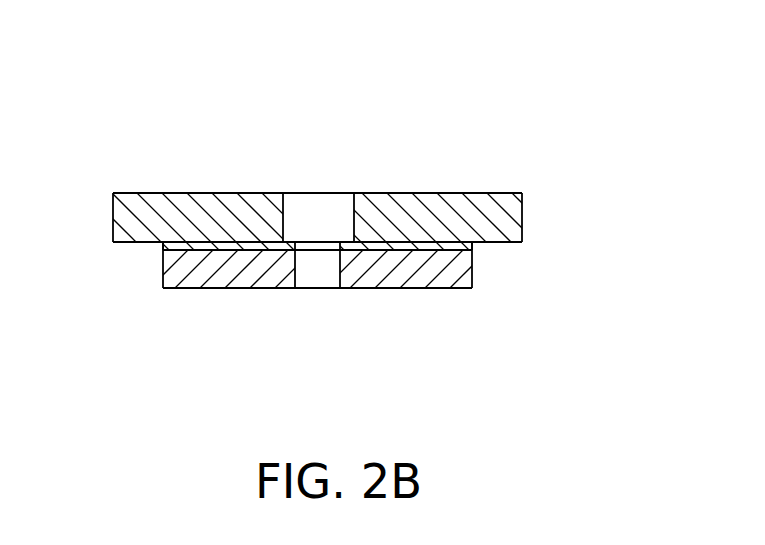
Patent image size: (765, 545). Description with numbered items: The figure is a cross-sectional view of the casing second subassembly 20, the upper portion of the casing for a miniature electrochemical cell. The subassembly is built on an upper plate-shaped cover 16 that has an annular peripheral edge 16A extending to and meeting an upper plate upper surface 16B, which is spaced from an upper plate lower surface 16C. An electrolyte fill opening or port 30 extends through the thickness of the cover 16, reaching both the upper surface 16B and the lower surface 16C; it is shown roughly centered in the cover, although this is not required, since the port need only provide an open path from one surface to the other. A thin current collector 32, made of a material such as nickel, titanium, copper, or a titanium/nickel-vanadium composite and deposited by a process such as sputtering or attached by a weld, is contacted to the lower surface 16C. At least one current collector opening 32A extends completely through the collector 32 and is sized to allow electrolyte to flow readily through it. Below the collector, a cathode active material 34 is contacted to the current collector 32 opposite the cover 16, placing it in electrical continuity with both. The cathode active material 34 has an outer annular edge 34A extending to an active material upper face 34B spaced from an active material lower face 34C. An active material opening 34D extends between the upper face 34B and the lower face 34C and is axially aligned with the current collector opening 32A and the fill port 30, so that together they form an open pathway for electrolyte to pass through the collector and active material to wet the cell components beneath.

The casing second subassembly 20 is at (530, 77).
The upper plate-shaped cover 16 is at (152, 218).
The annular peripheral edge 16A is at (522, 218).
The upper plate upper surface 16B is at (458, 193).
The upper plate lower surface 16C is at (498, 243).
The electrolyte fill opening or port 30 is at (292, 193).
The current collector 32 is at (187, 247).
The current collector opening 32A is at (330, 240).
The cathode active material 34 is at (222, 273).
The outer annular edge 34A is at (163, 267).
The active material upper face 34B is at (380, 248).
The active material lower face 34C is at (458, 288).
The active material opening 34D is at (296, 268).